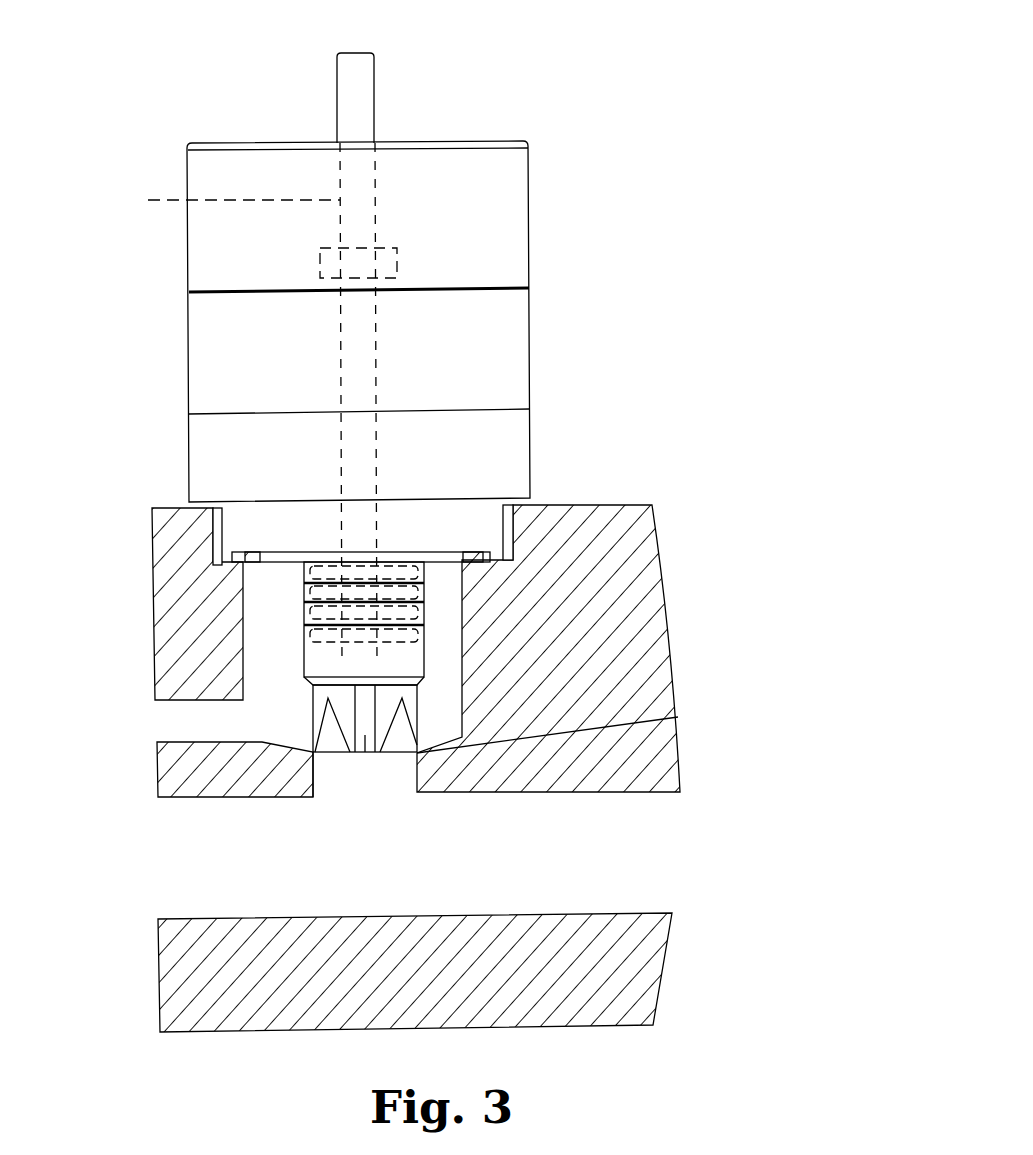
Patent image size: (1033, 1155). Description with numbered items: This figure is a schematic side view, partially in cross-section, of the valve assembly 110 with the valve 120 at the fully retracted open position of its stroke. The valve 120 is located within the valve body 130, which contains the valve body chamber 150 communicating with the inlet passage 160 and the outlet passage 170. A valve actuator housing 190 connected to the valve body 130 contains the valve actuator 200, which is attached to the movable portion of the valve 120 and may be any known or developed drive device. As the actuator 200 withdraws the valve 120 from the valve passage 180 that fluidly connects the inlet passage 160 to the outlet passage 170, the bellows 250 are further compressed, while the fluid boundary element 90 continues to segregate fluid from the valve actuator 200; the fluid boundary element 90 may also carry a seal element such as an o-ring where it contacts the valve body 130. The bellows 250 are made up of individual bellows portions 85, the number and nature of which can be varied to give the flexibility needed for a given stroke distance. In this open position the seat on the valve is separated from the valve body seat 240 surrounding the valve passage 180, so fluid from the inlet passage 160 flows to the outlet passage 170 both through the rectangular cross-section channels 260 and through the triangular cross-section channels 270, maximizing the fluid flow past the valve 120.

The valve assembly 110 is at (629, 66).
The valve actuator 200 is at (248, 403).
The valve actuator housing 190 is at (552, 205).
The valve body 130 is at (219, 650).
The fluid boundary element 90 is at (277, 552).
The valve body chamber 150 is at (295, 612).
The bellows 250 is at (433, 618).
The bellows portions 85 is at (305, 614).
The valve body seat 240 is at (313, 750).
The valve 120 is at (381, 761).
The triangular cross-section channels 270 is at (403, 740).
The rectangular cross-section channels 260 is at (365, 755).
The inlet passage 160 is at (220, 733).
The valve passage 180 is at (317, 783).
The outlet passage 170 is at (610, 895).